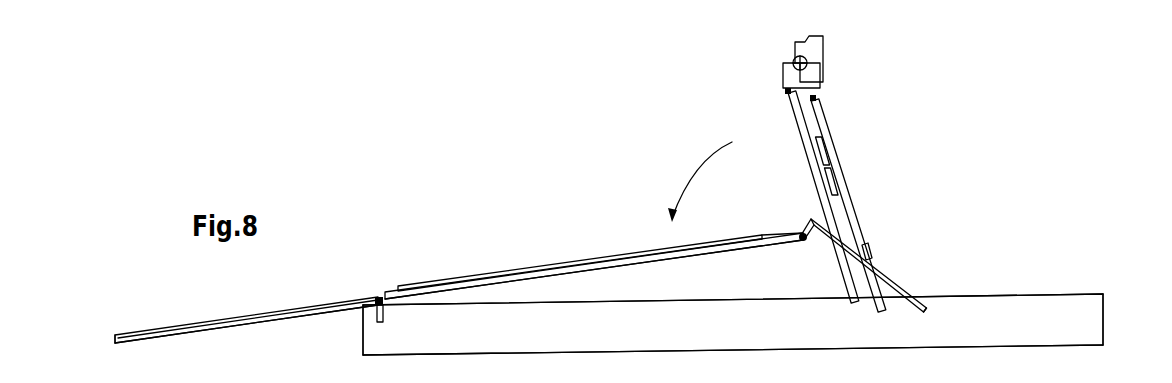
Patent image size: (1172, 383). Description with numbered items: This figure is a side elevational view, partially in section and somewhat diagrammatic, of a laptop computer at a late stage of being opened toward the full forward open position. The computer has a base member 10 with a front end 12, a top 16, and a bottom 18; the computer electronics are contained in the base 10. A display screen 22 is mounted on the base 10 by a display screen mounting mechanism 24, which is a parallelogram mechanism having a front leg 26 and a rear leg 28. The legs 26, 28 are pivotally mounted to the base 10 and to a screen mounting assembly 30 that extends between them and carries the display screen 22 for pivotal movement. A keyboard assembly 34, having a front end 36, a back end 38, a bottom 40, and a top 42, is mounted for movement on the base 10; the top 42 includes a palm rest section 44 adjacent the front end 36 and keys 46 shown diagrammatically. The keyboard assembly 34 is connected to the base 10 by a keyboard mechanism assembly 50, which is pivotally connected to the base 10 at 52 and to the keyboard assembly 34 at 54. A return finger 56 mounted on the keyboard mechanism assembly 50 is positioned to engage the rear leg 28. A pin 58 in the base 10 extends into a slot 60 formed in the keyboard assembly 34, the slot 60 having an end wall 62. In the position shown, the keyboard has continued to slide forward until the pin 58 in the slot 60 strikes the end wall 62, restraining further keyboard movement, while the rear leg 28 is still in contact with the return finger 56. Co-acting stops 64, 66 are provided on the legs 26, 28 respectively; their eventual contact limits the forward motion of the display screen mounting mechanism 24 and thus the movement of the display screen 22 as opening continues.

The base member 10 is at (1022, 308).
The front end 12 is at (363, 335).
The top 16 is at (655, 299).
The bottom 18 is at (585, 353).
The display screen 22 is at (822, 50).
The display screen mounting mechanism 24 is at (819, 199).
The front leg 26 is at (795, 110).
The rear leg 28 is at (852, 208).
The screen mounting assembly 30 is at (820, 84).
The keyboard assembly 34 is at (570, 254).
The front end 36 is at (113, 337).
The back end 38 is at (810, 226).
The bottom 40 is at (722, 252).
The top 42 is at (792, 234).
The palm rest section 44 is at (250, 314).
The keys 46 is at (456, 280).
The keyboard mechanism assembly 50 is at (910, 262).
The pivotal connection to base 52 is at (926, 312).
The pivotal connection to keyboard assembly 54 is at (803, 241).
The return finger 56 is at (873, 247).
The pin 58 is at (384, 318).
The slot 60 is at (304, 317).
The end wall 62 is at (375, 297).
The stop 64 is at (830, 183).
The stop 66 is at (824, 147).